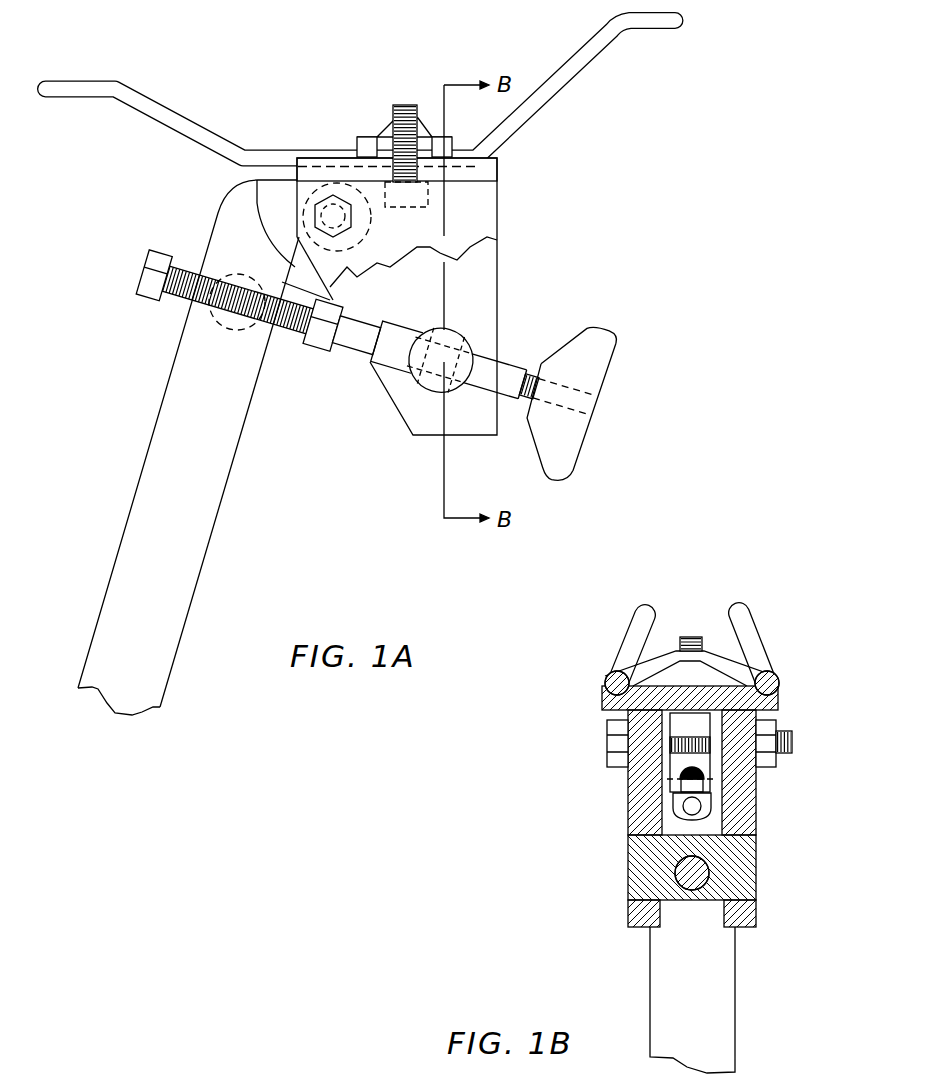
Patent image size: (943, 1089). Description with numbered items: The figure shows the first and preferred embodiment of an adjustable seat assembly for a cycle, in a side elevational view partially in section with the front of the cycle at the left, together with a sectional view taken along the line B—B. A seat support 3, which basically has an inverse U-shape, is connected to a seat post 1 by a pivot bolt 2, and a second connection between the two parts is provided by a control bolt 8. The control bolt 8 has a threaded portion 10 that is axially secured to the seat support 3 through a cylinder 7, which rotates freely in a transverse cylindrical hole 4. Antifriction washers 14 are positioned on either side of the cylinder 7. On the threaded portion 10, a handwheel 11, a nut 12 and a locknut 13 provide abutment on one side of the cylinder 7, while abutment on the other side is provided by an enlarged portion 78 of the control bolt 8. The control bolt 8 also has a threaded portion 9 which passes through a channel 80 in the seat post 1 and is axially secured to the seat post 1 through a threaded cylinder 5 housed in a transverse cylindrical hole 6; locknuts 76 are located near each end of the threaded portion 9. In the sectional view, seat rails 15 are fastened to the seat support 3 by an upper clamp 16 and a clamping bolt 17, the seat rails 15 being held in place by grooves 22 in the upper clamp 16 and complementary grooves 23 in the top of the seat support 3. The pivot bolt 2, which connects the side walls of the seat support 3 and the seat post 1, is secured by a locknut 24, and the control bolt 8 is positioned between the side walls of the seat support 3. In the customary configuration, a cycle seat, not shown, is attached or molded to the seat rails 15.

In FIG. 1A, the seat post 1 is at (213, 467).
In FIG. 1B, the seat post 1 is at (708, 1022).
In FIG. 1A, the pivot bolt 2 is at (332, 207).
In FIG. 1B, the pivot bolt 2 is at (618, 740).
In FIG. 1A, the seat support 3 is at (470, 210).
In FIG. 1B, the seat support 3 is at (655, 777).
In FIG. 1A, the transverse cylindrical hole 4 is at (447, 363).
In FIG. 1A, the threaded cylinder 5 is at (200, 277).
In FIG. 1A, the transverse cylindrical hole 6 is at (230, 327).
In FIG. 1A, the cylinder 7 is at (457, 333).
In FIG. 1B, the cylinder 7 is at (717, 900).
In FIG. 1A, the control bolt 8 is at (320, 363).
In FIG. 1B, the control bolt 8 is at (677, 878).
In FIG. 1A, the threaded portion 9 is at (290, 340).
In FIG. 1A, the threaded portion 10 is at (568, 388).
In FIG. 1A, the handwheel 11 is at (557, 448).
In FIG. 1A, the nut 12 is at (509, 400).
In FIG. 1A, the locknut 13 is at (470, 360).
In FIG. 1A, the antifriction washers 14 is at (404, 388).
In FIG. 1A, the seat rails 15 is at (585, 58).
In FIG. 1B, the seat rails 15 is at (738, 613).
In FIG. 1A, the upper clamp 16 is at (385, 125).
In FIG. 1B, the upper clamp 16 is at (723, 657).
In FIG. 1A, the clamping bolt 17 is at (407, 193).
In FIG. 1B, the clamping bolt 17 is at (690, 723).
In FIG. 1B, the grooves 22 is at (607, 680).
In FIG. 1B, the complementary grooves 23 is at (605, 700).
In FIG. 1B, the locknut 24 is at (765, 757).
In FIG. 1A, the locknuts 76 is at (226, 288).
In FIG. 1A, the enlarged portion 78 is at (397, 353).
In FIG. 1A, the channel 80 is at (200, 313).